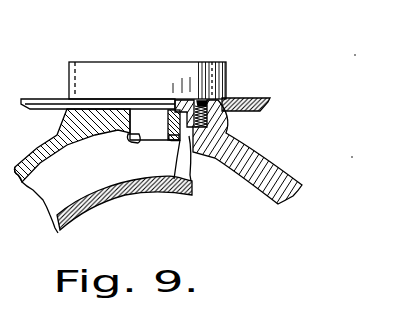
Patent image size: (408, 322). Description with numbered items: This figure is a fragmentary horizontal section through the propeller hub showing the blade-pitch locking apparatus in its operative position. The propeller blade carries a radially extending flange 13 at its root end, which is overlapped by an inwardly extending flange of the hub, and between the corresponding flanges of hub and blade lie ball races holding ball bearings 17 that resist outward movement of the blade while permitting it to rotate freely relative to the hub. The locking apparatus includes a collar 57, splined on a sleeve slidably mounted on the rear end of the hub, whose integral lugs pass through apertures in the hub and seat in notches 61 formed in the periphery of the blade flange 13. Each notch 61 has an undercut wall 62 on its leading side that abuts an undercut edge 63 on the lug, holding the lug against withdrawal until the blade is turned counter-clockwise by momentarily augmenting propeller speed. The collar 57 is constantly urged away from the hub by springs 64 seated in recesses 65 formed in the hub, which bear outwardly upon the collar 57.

The radially extending flange 13 is at (57, 200).
The ball bearings 17 is at (40, 144).
The collar 57 is at (247, 98).
The notches 61 is at (160, 188).
The undercut wall 62 is at (138, 141).
The undercut edge 63 is at (127, 135).
The springs 64 is at (201, 101).
The recesses 65 is at (230, 118).